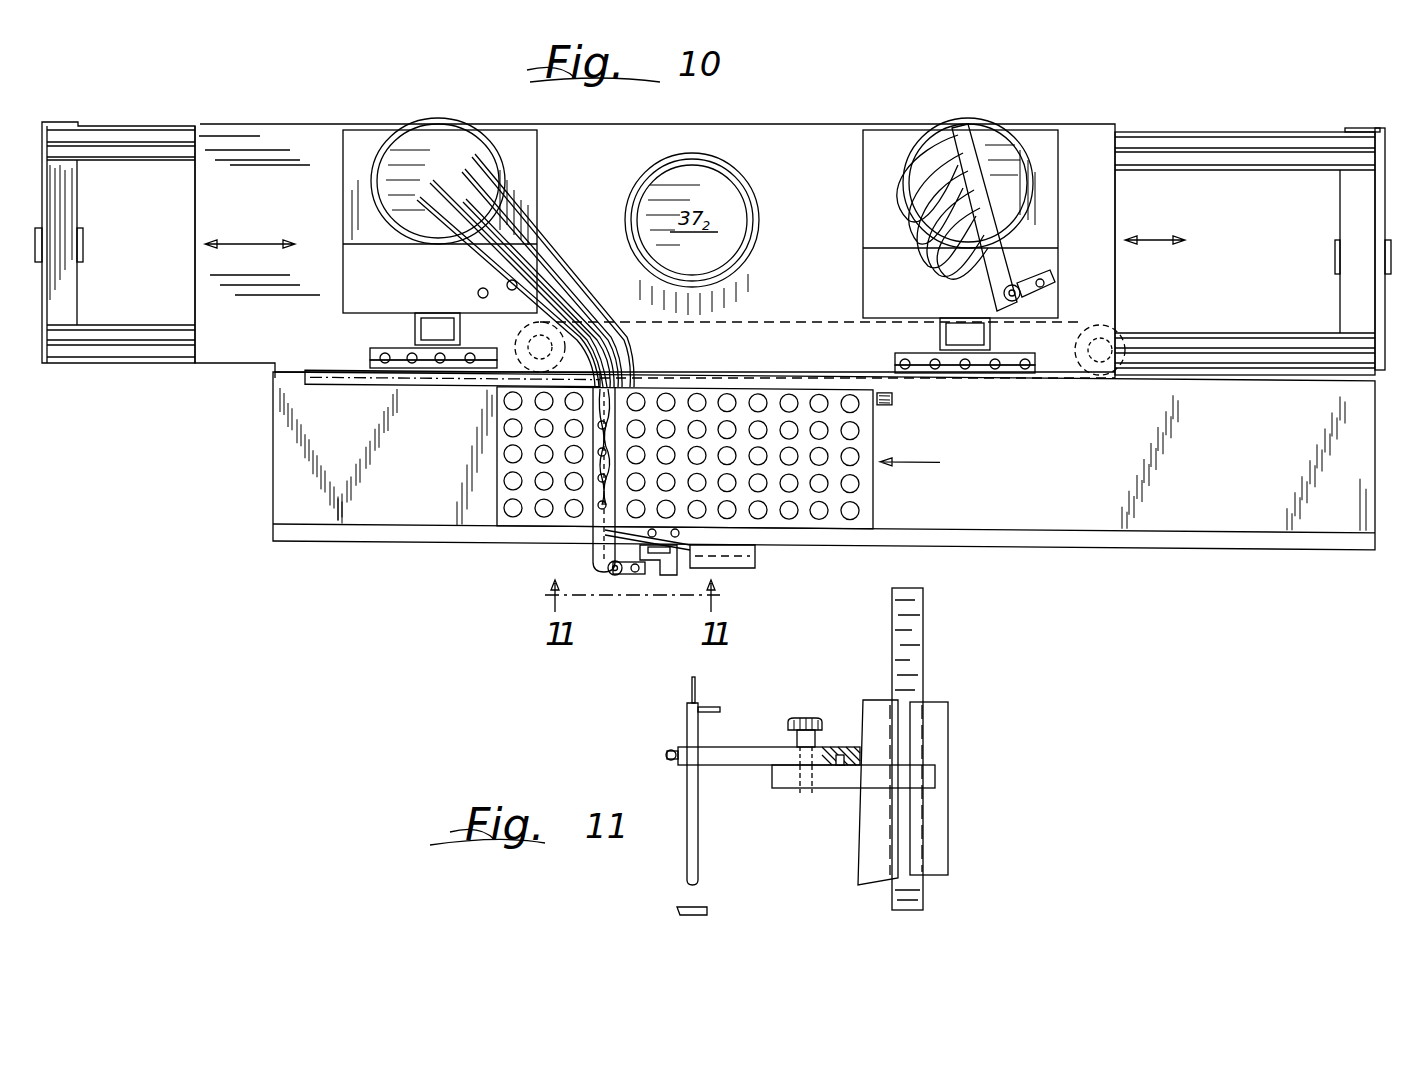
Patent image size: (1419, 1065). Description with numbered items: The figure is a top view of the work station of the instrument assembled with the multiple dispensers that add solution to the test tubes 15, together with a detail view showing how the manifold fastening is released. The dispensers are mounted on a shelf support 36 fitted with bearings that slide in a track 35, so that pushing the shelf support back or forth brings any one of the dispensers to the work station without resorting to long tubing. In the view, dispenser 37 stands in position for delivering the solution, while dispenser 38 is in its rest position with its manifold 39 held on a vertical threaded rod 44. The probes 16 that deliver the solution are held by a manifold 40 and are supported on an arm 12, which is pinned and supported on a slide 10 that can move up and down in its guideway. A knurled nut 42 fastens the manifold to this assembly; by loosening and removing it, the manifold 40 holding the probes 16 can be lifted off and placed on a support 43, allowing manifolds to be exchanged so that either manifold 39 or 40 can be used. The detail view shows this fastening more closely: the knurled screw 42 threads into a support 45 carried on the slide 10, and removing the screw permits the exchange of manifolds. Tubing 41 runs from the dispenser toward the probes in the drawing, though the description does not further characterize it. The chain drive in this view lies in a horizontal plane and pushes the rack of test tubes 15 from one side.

In FIG. 11, the slide 10 is at (920, 648).
In FIG. 11, the arm 12 is at (940, 738).
In FIG. 11, the test tubes 15 is at (680, 908).
In FIG. 10, the probes 16 is at (593, 485).
In FIG. 11, the probes 16 is at (690, 713).
In FIG. 10, the track 35 is at (1232, 148).
In FIG. 10, the shelf support 36 is at (828, 158).
In FIG. 10, the dispenser 37 is at (446, 128).
In FIG. 10, the dispenser 38 is at (1012, 140).
In FIG. 10, the manifold 39 is at (1020, 256).
In FIG. 10, the manifold 40 is at (593, 547).
In FIG. 10, the tubes 41 is at (552, 236).
In FIG. 10, the knurled nut 42 is at (612, 578).
In FIG. 11, the knurled nut 42 is at (830, 700).
In FIG. 10, the support 43 is at (478, 291).
In FIG. 10, the vertical threaded rod 44 is at (1048, 268).
In FIG. 10, the support 45 is at (658, 578).
In FIG. 11, the support 45 is at (848, 786).